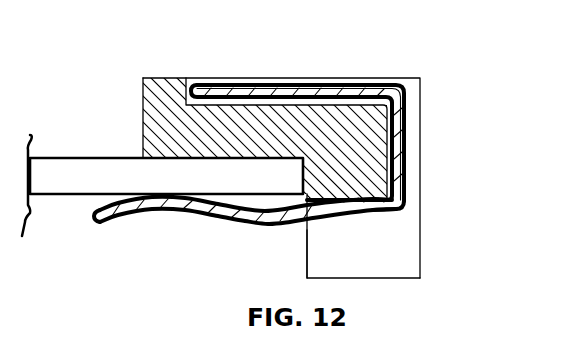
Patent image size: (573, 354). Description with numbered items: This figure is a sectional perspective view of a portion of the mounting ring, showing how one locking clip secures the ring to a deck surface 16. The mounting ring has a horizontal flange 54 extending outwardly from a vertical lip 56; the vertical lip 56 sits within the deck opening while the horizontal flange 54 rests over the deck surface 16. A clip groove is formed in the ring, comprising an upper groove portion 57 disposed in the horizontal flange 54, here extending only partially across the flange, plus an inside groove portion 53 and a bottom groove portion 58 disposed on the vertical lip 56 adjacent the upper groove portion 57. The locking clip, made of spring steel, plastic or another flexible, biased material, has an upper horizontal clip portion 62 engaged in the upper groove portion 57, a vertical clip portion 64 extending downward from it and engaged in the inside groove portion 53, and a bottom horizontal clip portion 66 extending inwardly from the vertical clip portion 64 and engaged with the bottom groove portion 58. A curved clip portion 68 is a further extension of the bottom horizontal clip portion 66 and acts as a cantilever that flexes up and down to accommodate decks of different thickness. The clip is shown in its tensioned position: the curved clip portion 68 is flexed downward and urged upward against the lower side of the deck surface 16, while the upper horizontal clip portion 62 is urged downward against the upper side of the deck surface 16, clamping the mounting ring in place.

The deck surface 16 is at (107, 170).
The inside groove portion 53 is at (413, 143).
The horizontal flange 54 is at (153, 97).
The vertical lip 56 is at (398, 282).
The upper groove portion 57 is at (323, 80).
The bottom groove portion 58 is at (402, 242).
The upper horizontal clip portion 62 is at (262, 90).
The vertical clip portion 64 is at (398, 117).
The bottom horizontal clip portion 66 is at (358, 211).
The curved clip portion 68 is at (187, 213).